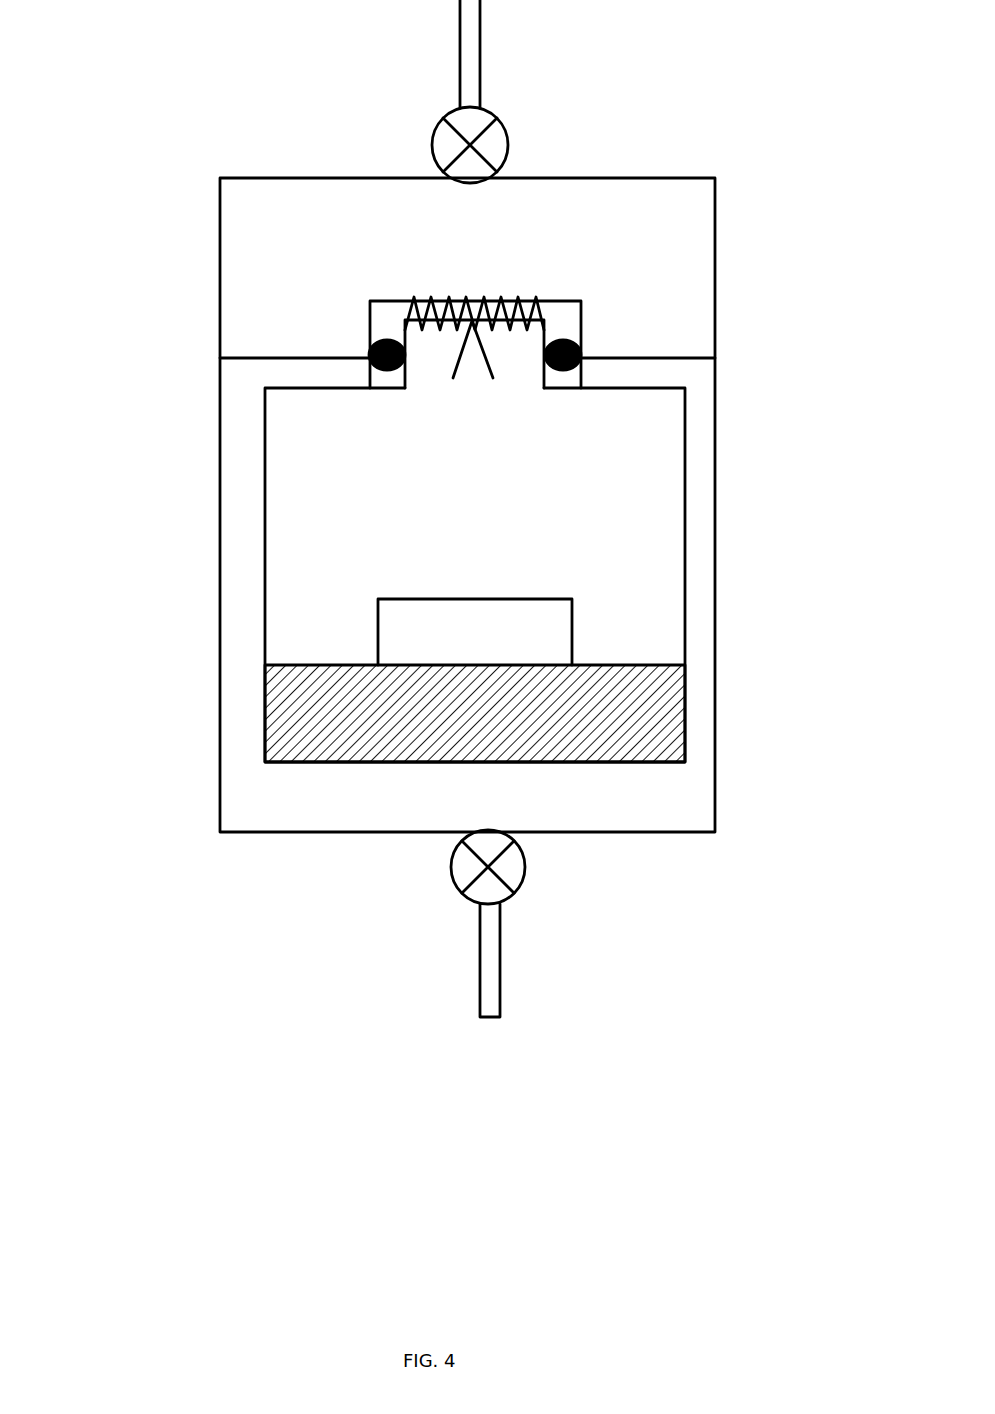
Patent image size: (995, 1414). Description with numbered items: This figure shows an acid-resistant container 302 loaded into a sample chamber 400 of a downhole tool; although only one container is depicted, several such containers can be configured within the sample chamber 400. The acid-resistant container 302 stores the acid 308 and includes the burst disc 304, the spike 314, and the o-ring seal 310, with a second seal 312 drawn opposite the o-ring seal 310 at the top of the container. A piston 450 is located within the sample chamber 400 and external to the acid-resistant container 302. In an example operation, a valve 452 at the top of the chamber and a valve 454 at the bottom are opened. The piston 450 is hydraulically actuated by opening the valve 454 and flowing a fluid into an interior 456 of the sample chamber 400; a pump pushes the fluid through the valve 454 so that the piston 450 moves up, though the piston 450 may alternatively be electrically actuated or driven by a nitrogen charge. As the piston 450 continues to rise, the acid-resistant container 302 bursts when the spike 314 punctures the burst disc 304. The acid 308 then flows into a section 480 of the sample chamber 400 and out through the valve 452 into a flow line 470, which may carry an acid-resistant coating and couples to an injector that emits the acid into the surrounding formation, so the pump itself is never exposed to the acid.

The sample chamber 400 is at (677, 178).
The section of the sample chamber 480 is at (328, 221).
The flow line 470 is at (457, 77).
The valve 452 is at (431, 147).
The valve 454 is at (452, 867).
The interior of the sample chamber 456 is at (340, 813).
The acid-resistant container 302 is at (263, 460).
The piston 450 is at (263, 715).
The acid 308 is at (514, 503).
The spike 314 is at (485, 380).
The burst disc 304 is at (455, 326).
The o-ring seal 310 is at (370, 345).
The seal 312 is at (580, 358).